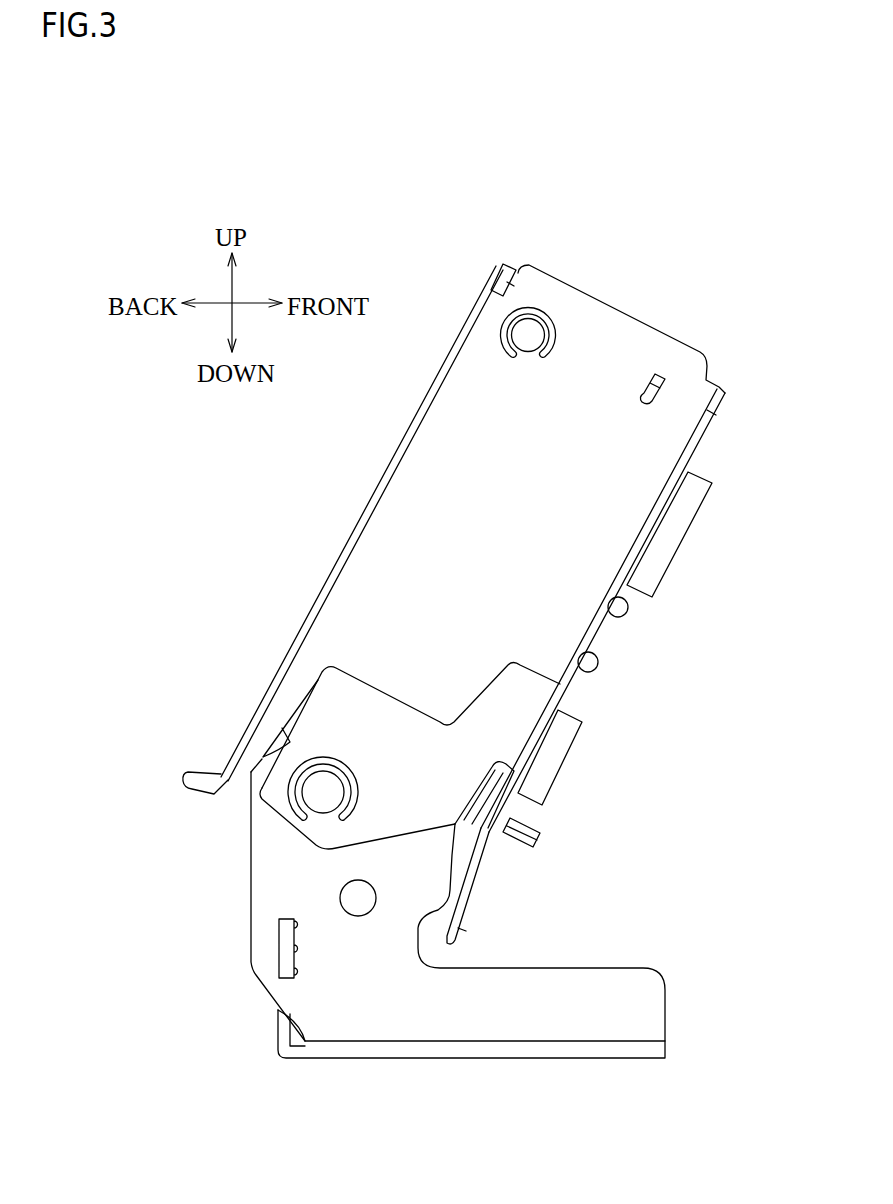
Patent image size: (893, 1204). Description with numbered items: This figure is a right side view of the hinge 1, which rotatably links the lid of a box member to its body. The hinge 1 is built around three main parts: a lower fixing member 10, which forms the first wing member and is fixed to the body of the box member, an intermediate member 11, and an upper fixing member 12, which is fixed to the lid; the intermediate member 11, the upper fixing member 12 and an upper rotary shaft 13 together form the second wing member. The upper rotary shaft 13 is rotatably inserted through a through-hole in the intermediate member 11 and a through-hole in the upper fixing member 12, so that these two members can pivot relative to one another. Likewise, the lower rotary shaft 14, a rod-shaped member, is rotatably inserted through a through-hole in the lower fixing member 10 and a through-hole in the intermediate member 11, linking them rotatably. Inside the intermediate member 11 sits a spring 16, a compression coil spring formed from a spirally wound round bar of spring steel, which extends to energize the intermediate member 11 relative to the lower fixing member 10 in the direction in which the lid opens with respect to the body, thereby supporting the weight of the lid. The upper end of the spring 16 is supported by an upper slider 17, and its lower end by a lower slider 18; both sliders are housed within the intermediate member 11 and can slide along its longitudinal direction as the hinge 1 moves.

The hinge 1 is at (737, 222).
The lower fixing member 10 is at (697, 1018).
The intermediate member 11 is at (578, 707).
The upper fixing member 12 is at (372, 434).
The upper rotary shaft 13 is at (518, 336).
The lower rotary shaft 14 is at (320, 794).
The spring 16 is at (600, 665).
The upper slider 17 is at (699, 546).
The lower slider 18 is at (567, 798).